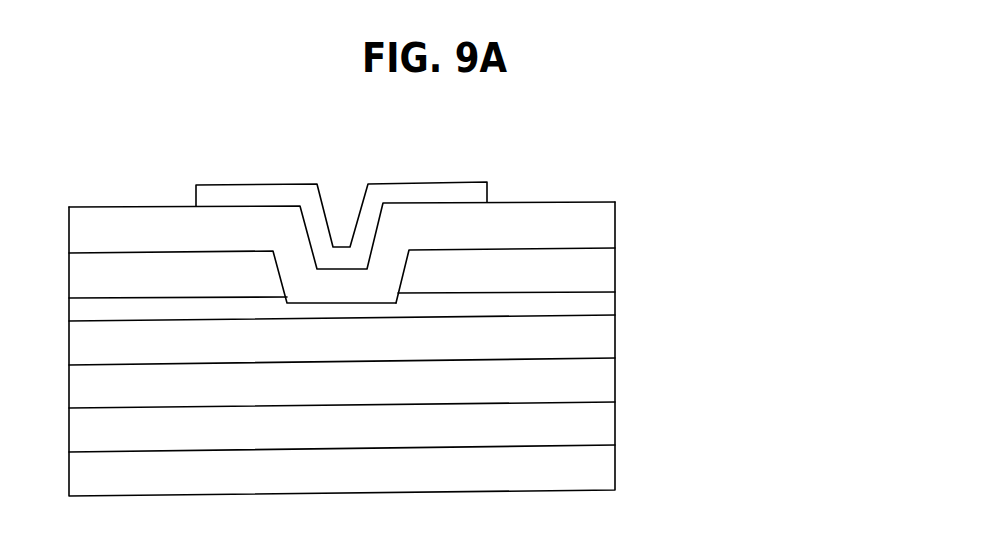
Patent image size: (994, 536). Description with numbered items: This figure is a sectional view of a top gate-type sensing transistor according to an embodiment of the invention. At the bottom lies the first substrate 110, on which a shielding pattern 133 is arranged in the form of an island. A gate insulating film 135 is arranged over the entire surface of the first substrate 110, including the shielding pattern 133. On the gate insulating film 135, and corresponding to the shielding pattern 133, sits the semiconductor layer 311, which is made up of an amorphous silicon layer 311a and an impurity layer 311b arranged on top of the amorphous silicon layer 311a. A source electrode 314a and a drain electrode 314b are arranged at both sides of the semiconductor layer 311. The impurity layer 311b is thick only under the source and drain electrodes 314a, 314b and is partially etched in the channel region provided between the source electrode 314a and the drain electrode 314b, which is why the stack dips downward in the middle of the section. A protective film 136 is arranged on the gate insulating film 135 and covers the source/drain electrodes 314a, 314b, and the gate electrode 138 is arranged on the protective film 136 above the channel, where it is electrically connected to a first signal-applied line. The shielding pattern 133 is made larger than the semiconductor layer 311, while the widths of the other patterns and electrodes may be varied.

The first substrate 110 is at (612, 470).
The shielding pattern 133 is at (612, 424).
The gate insulating film 135 is at (612, 386).
The semiconductor layer 311 is at (735, 282).
The amorphous silicon layer 311a is at (612, 333).
The impurity layer 311b is at (612, 300).
The protective film 136 is at (612, 225).
The gate electrode 138 is at (413, 190).
The source electrode 314a is at (130, 265).
The drain electrode 314b is at (527, 263).